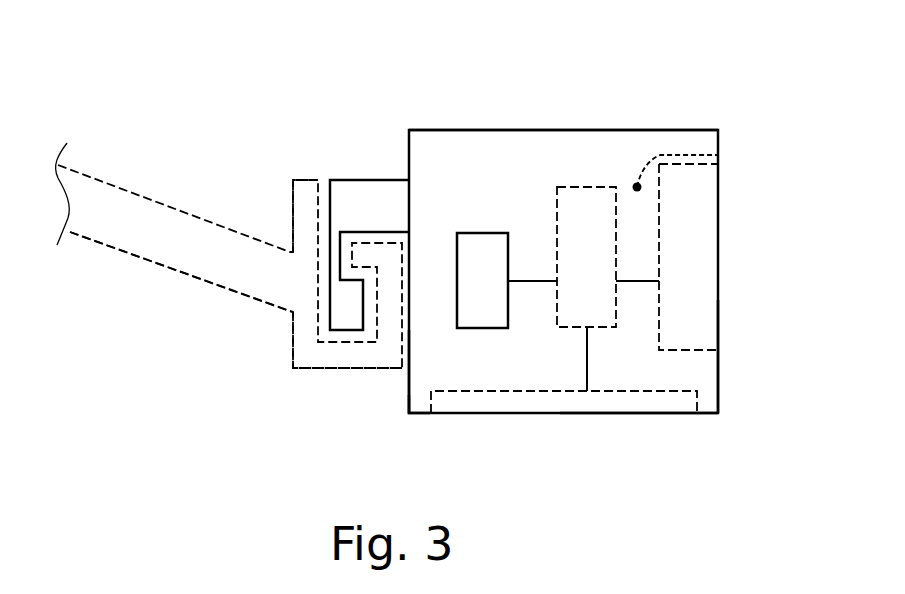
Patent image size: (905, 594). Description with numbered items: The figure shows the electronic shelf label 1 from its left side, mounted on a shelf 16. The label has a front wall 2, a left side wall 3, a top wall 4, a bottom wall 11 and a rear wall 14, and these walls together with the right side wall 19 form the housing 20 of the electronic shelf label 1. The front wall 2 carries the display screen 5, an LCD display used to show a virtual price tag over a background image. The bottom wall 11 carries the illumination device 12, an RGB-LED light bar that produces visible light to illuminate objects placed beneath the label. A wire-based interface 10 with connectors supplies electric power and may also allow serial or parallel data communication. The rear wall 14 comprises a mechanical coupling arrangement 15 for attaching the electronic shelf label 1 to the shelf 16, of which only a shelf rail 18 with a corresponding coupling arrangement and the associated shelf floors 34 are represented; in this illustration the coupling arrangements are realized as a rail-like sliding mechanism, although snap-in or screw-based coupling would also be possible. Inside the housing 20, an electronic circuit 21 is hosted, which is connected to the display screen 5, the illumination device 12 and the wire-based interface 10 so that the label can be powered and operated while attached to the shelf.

The electronic shelf label 1 is at (706, 125).
The front wall 2 is at (718, 375).
The left side wall 3 is at (505, 142).
The top wall 4 is at (618, 129).
The display screen 5 is at (705, 212).
The wire-based interface 10 is at (488, 233).
The bottom wall 11 is at (706, 414).
The illumination device 12 is at (608, 413).
The rear wall 14 is at (408, 395).
The mechanical coupling arrangement 15 is at (360, 193).
The shelf 16 is at (158, 200).
The shelf rail 18 is at (292, 356).
The right side wall 19 is at (718, 157).
The housing 20 is at (406, 420).
The electronic circuit 21 is at (590, 212).
The shelf floors 34 is at (147, 250).